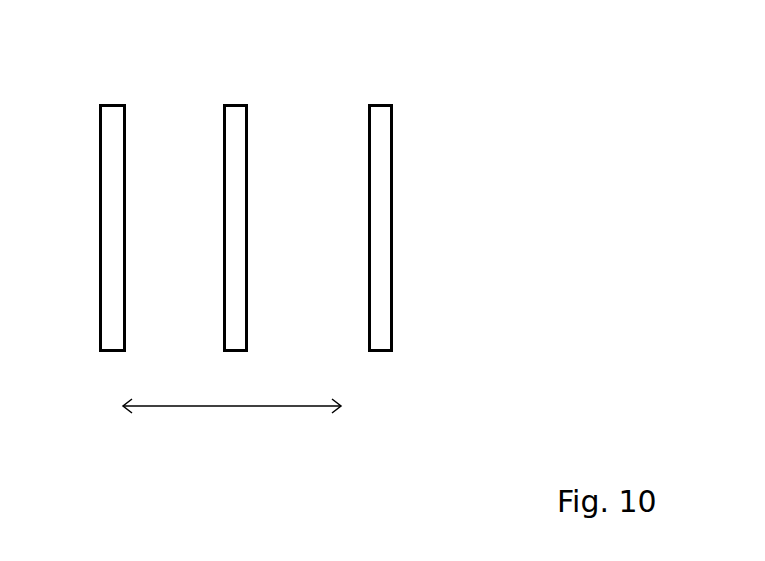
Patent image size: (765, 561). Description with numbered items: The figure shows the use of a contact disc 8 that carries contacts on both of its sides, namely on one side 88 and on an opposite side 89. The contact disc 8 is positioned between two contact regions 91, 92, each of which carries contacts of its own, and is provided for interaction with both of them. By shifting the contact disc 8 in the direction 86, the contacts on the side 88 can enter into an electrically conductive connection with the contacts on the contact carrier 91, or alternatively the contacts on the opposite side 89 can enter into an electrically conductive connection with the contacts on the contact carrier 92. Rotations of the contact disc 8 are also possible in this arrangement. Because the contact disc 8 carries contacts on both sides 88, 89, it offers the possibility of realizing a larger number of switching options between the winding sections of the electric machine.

The contact region 91 is at (112, 104).
The contact disc 8 is at (235, 104).
The contact region 92 is at (380, 104).
The side 88 is at (221, 118).
The opposite side 89 is at (249, 118).
The direction 86 is at (238, 406).